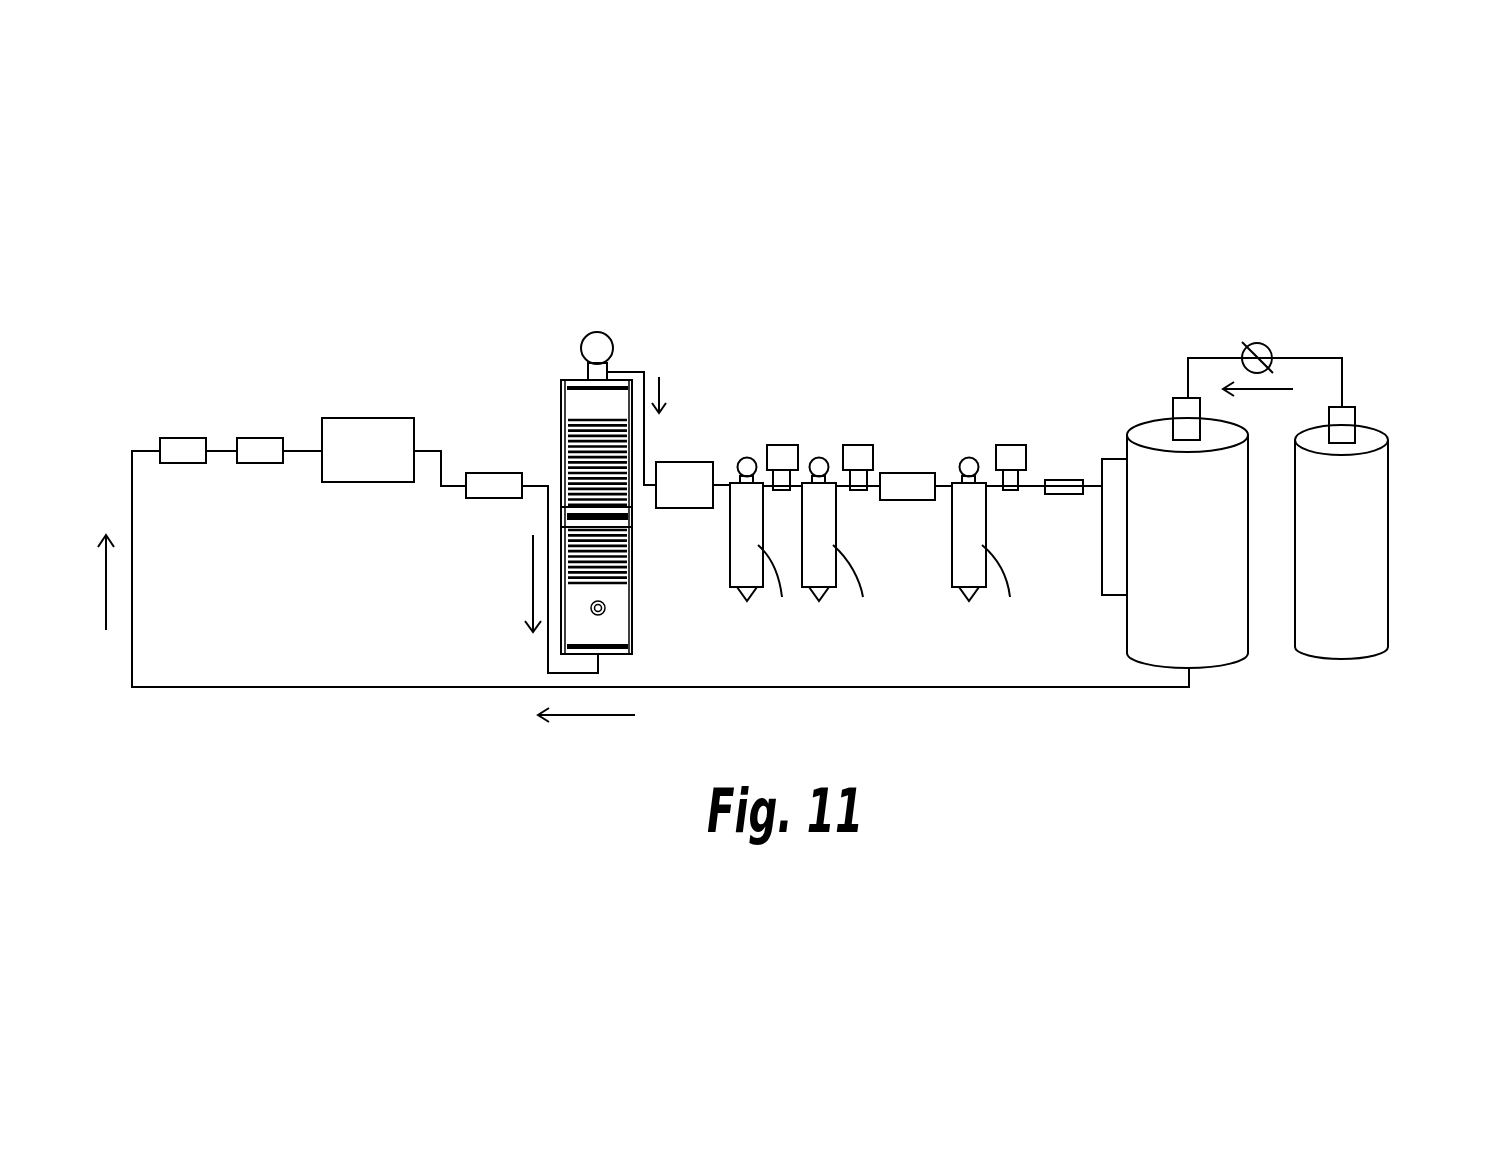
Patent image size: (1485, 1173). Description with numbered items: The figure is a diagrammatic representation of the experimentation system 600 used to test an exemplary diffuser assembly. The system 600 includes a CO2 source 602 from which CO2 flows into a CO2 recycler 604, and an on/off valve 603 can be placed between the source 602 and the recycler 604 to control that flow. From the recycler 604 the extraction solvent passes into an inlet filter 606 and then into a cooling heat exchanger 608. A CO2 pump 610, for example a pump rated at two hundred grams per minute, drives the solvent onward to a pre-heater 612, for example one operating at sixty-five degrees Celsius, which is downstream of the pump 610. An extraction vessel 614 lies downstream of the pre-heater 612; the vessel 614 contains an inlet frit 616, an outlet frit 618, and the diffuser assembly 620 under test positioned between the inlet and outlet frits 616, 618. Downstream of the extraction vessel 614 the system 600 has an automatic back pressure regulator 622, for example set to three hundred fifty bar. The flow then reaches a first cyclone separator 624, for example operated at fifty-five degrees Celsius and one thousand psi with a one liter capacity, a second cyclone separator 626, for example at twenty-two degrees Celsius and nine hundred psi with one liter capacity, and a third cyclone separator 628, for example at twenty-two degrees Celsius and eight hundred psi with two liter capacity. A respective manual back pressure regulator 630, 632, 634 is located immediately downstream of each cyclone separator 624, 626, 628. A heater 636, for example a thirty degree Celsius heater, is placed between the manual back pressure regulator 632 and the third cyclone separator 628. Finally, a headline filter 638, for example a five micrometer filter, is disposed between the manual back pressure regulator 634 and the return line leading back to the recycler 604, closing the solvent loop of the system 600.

The experimentation system 600 is at (783, 466).
The CO2 source 602 is at (1367, 432).
The on/off valve 603 is at (1260, 342).
The CO2 recycler 604 is at (1152, 428).
The inlet filter 606 is at (180, 443).
The cooling heat exchanger 608 is at (258, 440).
The CO2 pump 610 is at (367, 420).
The pre-heater 612 is at (487, 493).
The extraction vessel 614 is at (602, 335).
The inlet frit 616 is at (638, 645).
The outlet frit 618 is at (597, 475).
The diffuser assembly 620 is at (636, 518).
The automatic back pressure regulator 622 is at (683, 460).
The first cyclone separator 624 is at (747, 458).
The second cyclone separator 626 is at (819, 458).
The third cyclone separator 628 is at (969, 458).
The manual back pressure regulator 630 is at (782, 445).
The manual back pressure regulator 632 is at (858, 445).
The manual back pressure regulator 634 is at (1012, 445).
The heater 636 is at (910, 500).
The headline filter 638 is at (1068, 494).